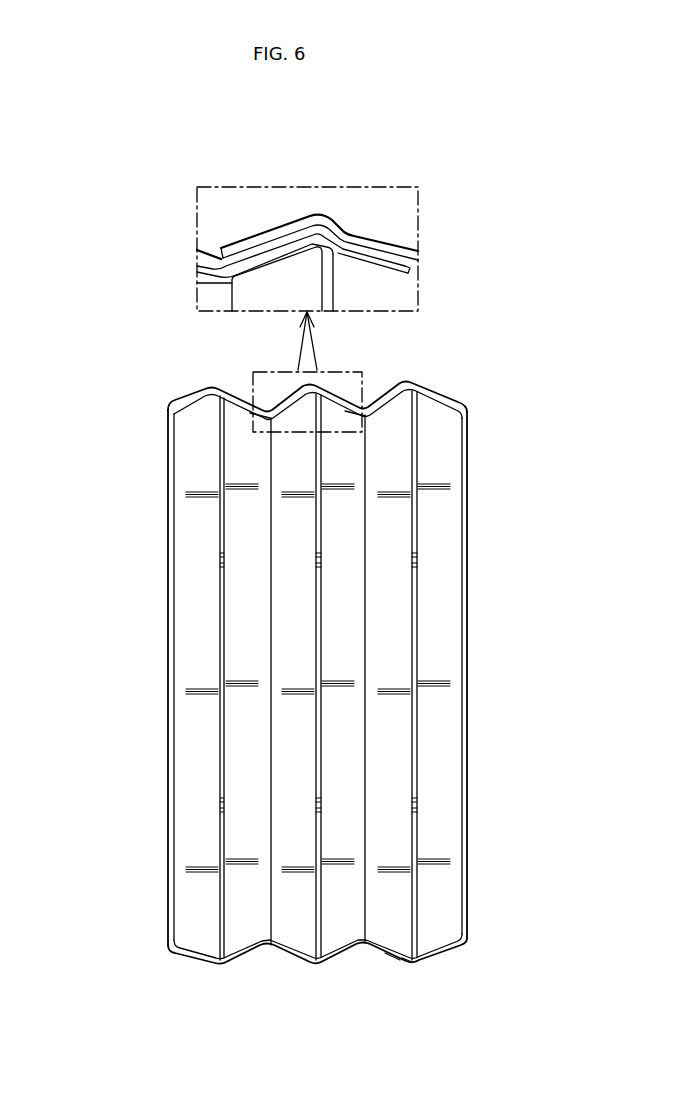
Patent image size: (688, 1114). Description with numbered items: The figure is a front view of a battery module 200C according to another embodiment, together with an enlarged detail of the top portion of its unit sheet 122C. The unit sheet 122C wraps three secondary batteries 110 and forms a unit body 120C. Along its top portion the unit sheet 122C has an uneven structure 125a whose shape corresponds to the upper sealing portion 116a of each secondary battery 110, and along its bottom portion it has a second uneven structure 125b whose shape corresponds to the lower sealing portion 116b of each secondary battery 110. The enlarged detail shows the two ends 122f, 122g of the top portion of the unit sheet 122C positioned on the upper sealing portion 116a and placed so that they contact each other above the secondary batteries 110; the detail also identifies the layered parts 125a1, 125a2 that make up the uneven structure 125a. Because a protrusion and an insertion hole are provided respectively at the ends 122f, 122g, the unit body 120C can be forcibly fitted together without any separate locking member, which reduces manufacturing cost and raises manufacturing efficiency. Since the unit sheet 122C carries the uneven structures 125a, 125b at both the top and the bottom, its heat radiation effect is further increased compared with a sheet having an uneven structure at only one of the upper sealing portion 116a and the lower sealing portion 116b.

The battery module 200C is at (182, 121).
The second adhesive layer portion 125a2 is at (247, 237).
The end of the top portion of the unit sheet 122g is at (198, 247).
The first adhesive layer portion 125a1 is at (232, 277).
The uneven structure 125a is at (102, 181).
The upper sealing portion 116a is at (290, 250).
The end of the top portion of the unit sheet 122f is at (413, 268).
The unit body 120C is at (142, 418).
The unit sheet 122C is at (168, 468).
The secondary battery 110 is at (257, 593).
The lower sealing portion 116b is at (398, 961).
The uneven structure 125b is at (407, 963).